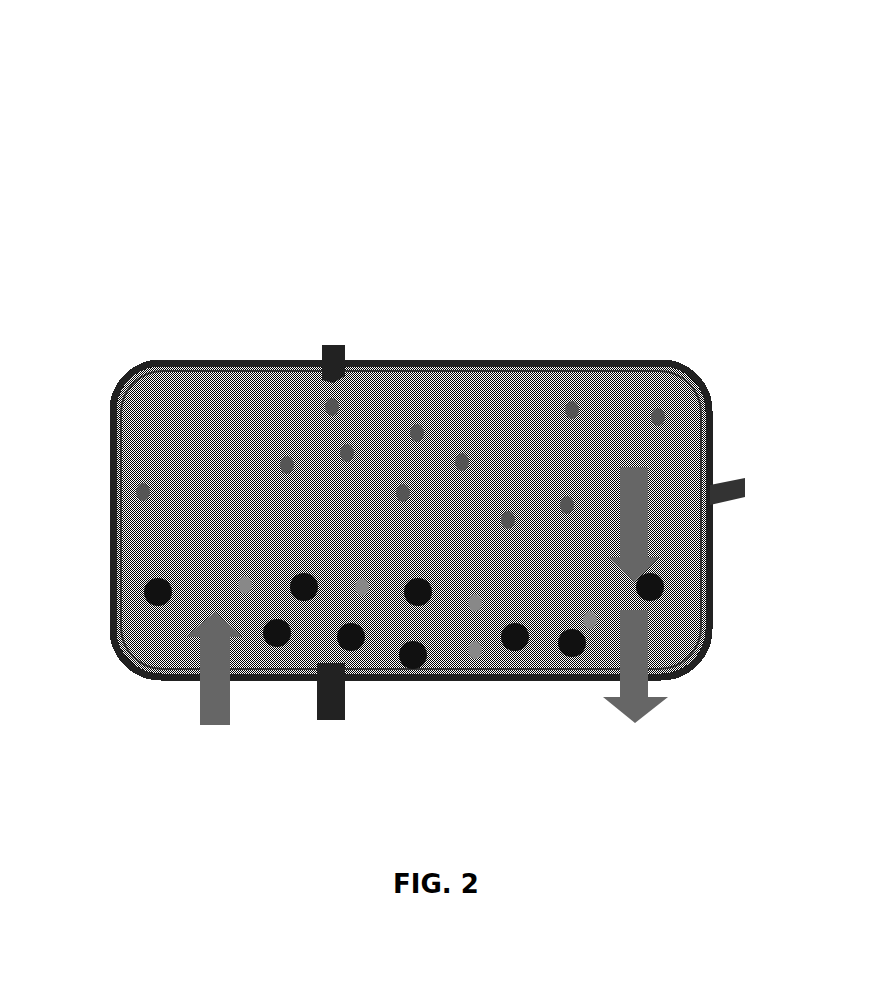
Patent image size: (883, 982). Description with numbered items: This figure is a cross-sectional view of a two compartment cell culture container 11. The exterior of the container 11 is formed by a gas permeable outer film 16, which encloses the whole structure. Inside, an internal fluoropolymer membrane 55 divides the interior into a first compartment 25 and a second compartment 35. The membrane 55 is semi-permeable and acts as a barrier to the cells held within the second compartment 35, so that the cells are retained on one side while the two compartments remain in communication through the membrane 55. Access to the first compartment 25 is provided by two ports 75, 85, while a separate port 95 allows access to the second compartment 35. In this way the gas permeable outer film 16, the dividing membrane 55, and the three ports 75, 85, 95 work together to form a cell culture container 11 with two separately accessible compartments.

The two compartment cell culture container 11 is at (417, 172).
The gas permeable outer film 16 is at (128, 376).
The first compartment 25 is at (472, 413).
The second compartment 35 is at (446, 627).
The internal fluoropolymer membrane 55 is at (140, 542).
The port 75 is at (320, 323).
The port 85 is at (748, 462).
The port 95 is at (332, 743).